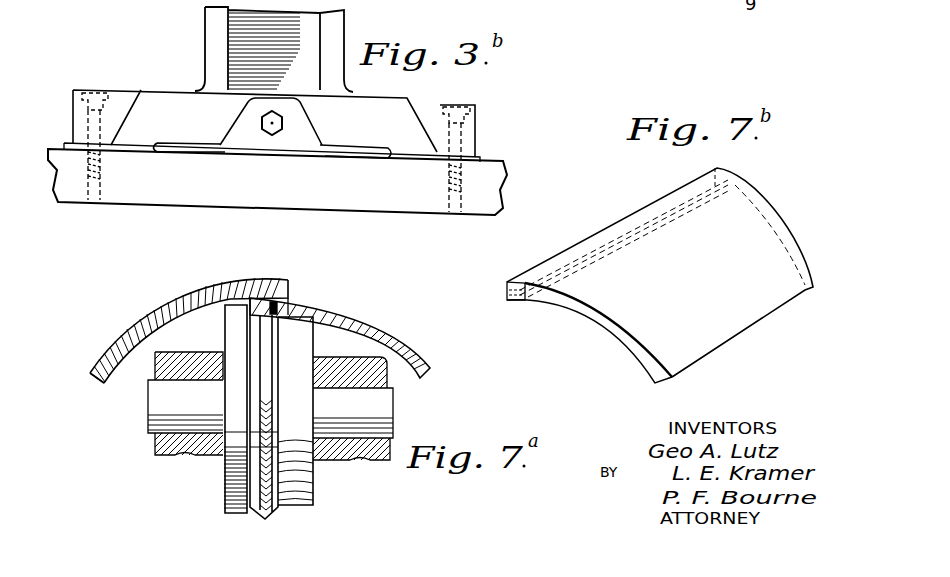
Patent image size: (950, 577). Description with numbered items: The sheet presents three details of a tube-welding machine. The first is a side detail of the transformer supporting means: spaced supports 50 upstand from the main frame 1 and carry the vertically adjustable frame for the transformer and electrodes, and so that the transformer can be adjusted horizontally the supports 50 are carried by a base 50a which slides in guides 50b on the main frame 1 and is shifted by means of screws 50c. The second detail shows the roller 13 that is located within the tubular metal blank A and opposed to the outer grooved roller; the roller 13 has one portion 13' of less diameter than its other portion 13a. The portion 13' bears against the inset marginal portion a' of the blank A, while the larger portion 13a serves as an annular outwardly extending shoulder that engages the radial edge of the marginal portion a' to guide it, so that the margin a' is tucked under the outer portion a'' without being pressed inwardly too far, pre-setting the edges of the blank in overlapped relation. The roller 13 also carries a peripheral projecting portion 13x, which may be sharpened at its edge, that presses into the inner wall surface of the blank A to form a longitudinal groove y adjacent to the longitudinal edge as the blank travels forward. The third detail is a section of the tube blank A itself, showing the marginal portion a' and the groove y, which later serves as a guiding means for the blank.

In FIG. 3B, the main frame 1 is at (137, 187).
In FIG. 3B, the spaced supports 50 is at (334, 25).
In FIG. 3B, the base 50a is at (163, 91).
In FIG. 3B, the guides 50b is at (510, 112).
In FIG. 3B, the screws 50c is at (270, 133).
In FIG. 7A, the roller 13 is at (204, 409).
In FIG. 7A, the roller portion of less diameter 13' is at (327, 413).
In FIG. 7A, the roller portion of greater diameter 13a is at (232, 329).
In FIG. 7A, the peripheral projecting portion 13x is at (272, 345).
In FIG. 7A, the marginal portion of the blank a' is at (282, 282).
In FIG. 7B, the marginal portion of the blank a' is at (660, 275).
In FIG. 7A, the outer portion of the blank a'' is at (257, 276).
In FIG. 7A, the longitudinal groove y is at (279, 306).
In FIG. 7B, the longitudinal groove y is at (521, 304).
In FIG. 7A, the tubular metal blank A is at (106, 384).